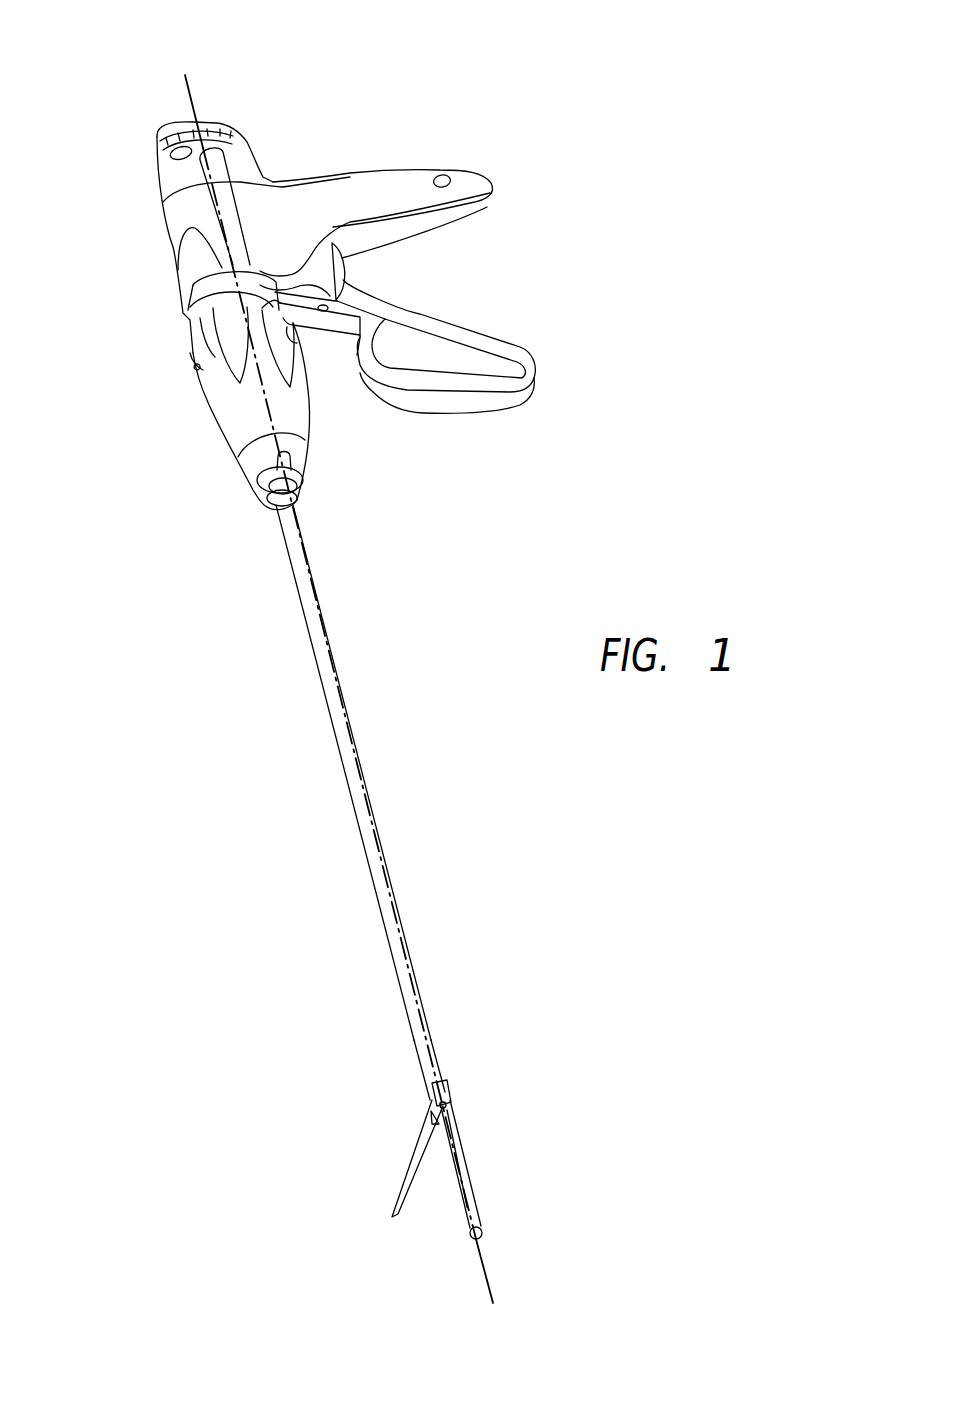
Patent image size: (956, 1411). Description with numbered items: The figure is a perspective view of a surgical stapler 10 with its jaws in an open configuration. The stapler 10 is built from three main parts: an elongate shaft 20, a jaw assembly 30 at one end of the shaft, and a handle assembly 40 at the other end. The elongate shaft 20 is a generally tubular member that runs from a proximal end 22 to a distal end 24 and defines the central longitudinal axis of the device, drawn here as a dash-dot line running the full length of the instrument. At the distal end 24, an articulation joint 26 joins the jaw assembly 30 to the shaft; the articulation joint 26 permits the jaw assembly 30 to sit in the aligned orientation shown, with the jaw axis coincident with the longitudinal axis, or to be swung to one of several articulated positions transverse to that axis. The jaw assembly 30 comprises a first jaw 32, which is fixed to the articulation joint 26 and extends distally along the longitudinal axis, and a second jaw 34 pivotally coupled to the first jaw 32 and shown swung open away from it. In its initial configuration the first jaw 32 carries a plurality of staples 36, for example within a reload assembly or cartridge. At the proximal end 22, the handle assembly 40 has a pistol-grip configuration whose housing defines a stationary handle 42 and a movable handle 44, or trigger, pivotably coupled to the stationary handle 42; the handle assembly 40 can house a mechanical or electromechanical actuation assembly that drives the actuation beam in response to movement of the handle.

The surgical stapler 10 is at (617, 405).
The elongate shaft 20 is at (370, 877).
The proximal end 22 is at (275, 503).
The distal end 24 is at (430, 1067).
The articulation joint 26 is at (452, 1085).
The jaw assembly 30 is at (608, 1037).
The first jaw 32 is at (480, 1213).
The second jaw 34 is at (400, 1184).
The staples 36 is at (472, 1166).
The handle assembly 40 is at (568, 137).
The stationary handle 42 is at (392, 175).
The movable handle 44 is at (448, 405).